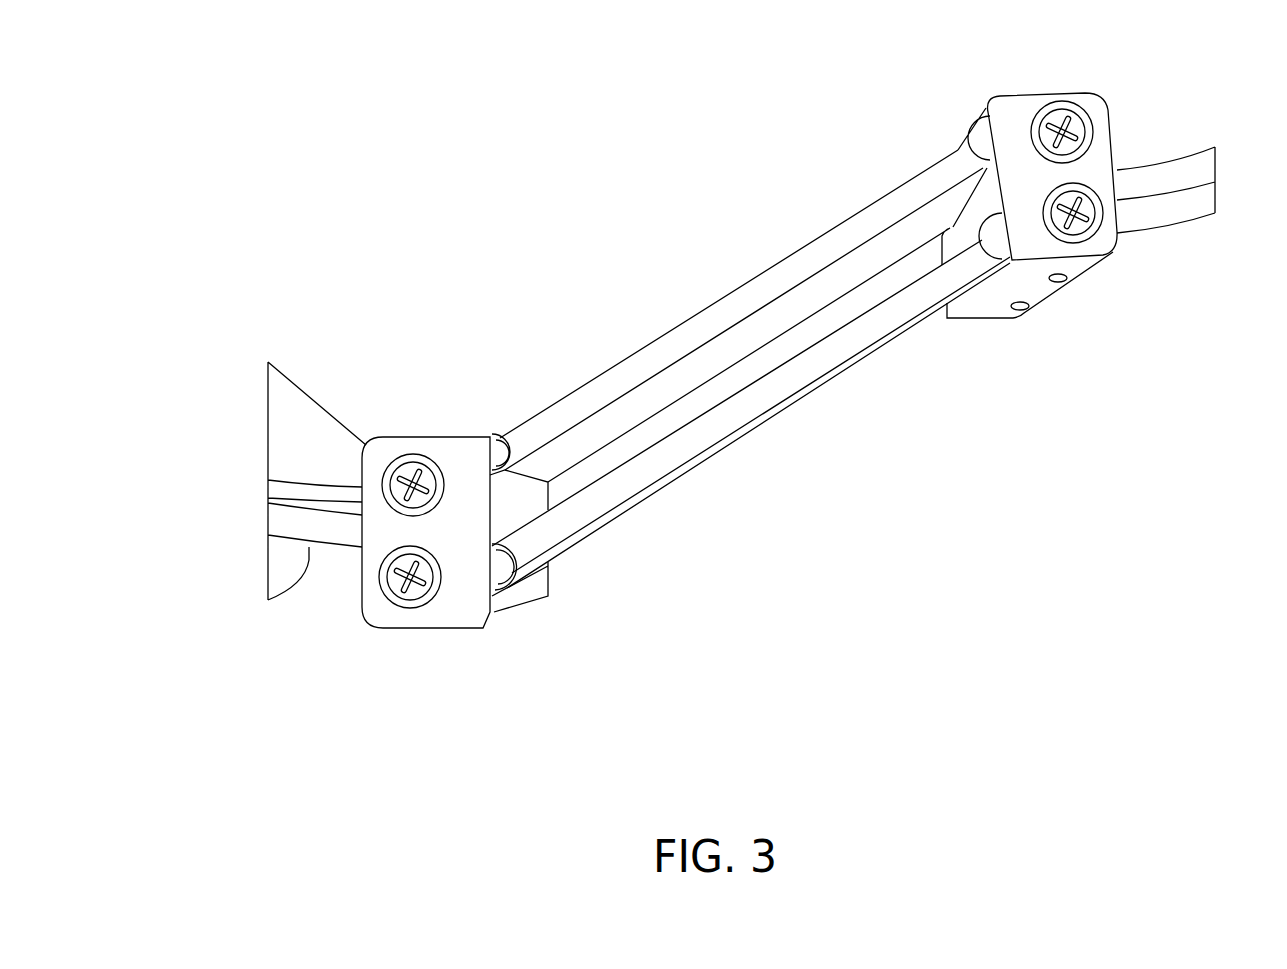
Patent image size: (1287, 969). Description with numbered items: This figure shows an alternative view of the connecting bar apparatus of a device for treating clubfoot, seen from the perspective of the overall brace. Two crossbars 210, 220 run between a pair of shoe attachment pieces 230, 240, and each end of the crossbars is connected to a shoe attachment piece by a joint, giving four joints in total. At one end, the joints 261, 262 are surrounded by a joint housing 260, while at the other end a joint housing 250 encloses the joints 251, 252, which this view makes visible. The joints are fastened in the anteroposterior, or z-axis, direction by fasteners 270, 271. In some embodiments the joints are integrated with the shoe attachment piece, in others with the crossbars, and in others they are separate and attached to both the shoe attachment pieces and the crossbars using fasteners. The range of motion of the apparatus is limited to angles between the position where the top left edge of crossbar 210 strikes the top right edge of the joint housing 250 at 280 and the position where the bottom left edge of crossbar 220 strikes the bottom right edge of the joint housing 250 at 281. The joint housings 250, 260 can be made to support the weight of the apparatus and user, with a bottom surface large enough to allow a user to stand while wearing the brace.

The crossbar 210 is at (785, 252).
The crossbar 220 is at (766, 446).
The shoe attachment piece 230 is at (297, 556).
The shoe attachment piece 240 is at (1161, 254).
The joint housing 250 is at (454, 641).
The joint 251 is at (500, 608).
The joint 252 is at (492, 456).
The joint housing 260 is at (1058, 300).
The joint 261 is at (999, 280).
The joint 262 is at (966, 116).
The fastener 270 is at (404, 597).
The fastener 271 is at (398, 510).
The strike point 280 is at (500, 434).
The strike point 281 is at (519, 586).